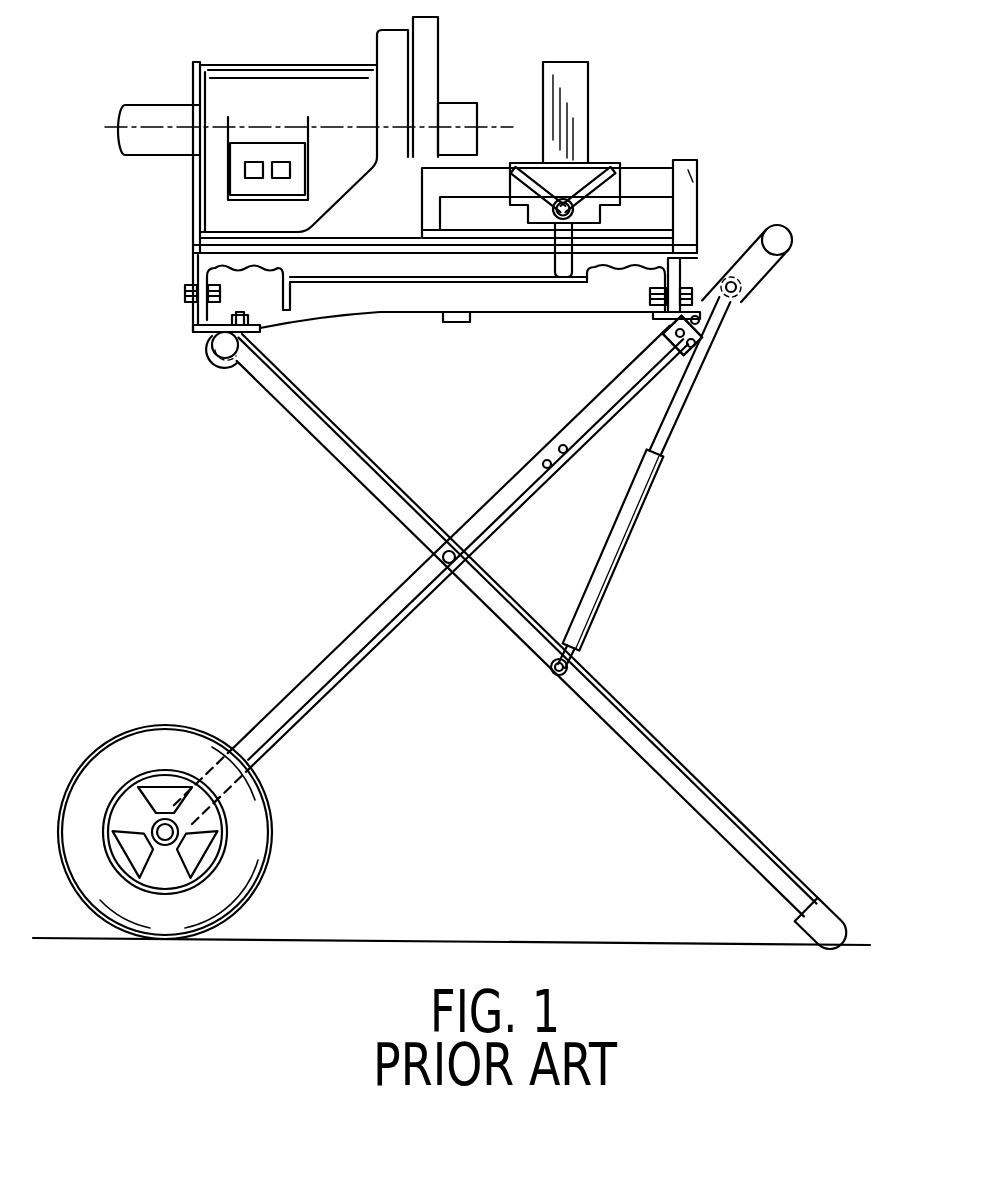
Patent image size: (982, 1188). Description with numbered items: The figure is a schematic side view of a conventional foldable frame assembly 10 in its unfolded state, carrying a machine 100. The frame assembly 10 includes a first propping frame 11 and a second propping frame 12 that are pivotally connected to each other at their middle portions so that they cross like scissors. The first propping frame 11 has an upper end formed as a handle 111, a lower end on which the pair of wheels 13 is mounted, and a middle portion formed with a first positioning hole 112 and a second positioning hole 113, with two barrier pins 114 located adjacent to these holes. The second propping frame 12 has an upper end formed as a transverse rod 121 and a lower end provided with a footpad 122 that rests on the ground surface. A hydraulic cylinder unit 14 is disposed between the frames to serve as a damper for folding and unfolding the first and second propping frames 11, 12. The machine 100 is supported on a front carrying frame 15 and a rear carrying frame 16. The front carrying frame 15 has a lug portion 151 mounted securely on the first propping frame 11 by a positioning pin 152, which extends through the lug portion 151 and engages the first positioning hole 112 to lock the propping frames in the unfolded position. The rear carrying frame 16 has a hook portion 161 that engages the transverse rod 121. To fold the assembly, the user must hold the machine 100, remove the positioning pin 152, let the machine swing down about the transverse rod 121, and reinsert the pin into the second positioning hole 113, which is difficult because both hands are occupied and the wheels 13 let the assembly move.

The machine 100 is at (688, 184).
The foldable frame assembly 10 is at (733, 790).
The first propping frame 11 is at (333, 628).
The second propping frame 12 is at (612, 708).
The wheels 13 is at (142, 743).
The hydraulic cylinder unit 14 is at (613, 555).
The front carrying frame 15 is at (698, 287).
The rear carrying frame 16 is at (192, 316).
The handle 111 is at (787, 238).
The first positioning hole 112 is at (682, 336).
The second positioning hole 113 is at (559, 446).
The barrier pins 114 is at (543, 463).
The transverse rod 121 is at (210, 338).
The footpad 122 is at (827, 907).
The lug portion 151 is at (672, 330).
The positioning pin 152 is at (677, 353).
The hook portion 161 is at (210, 357).